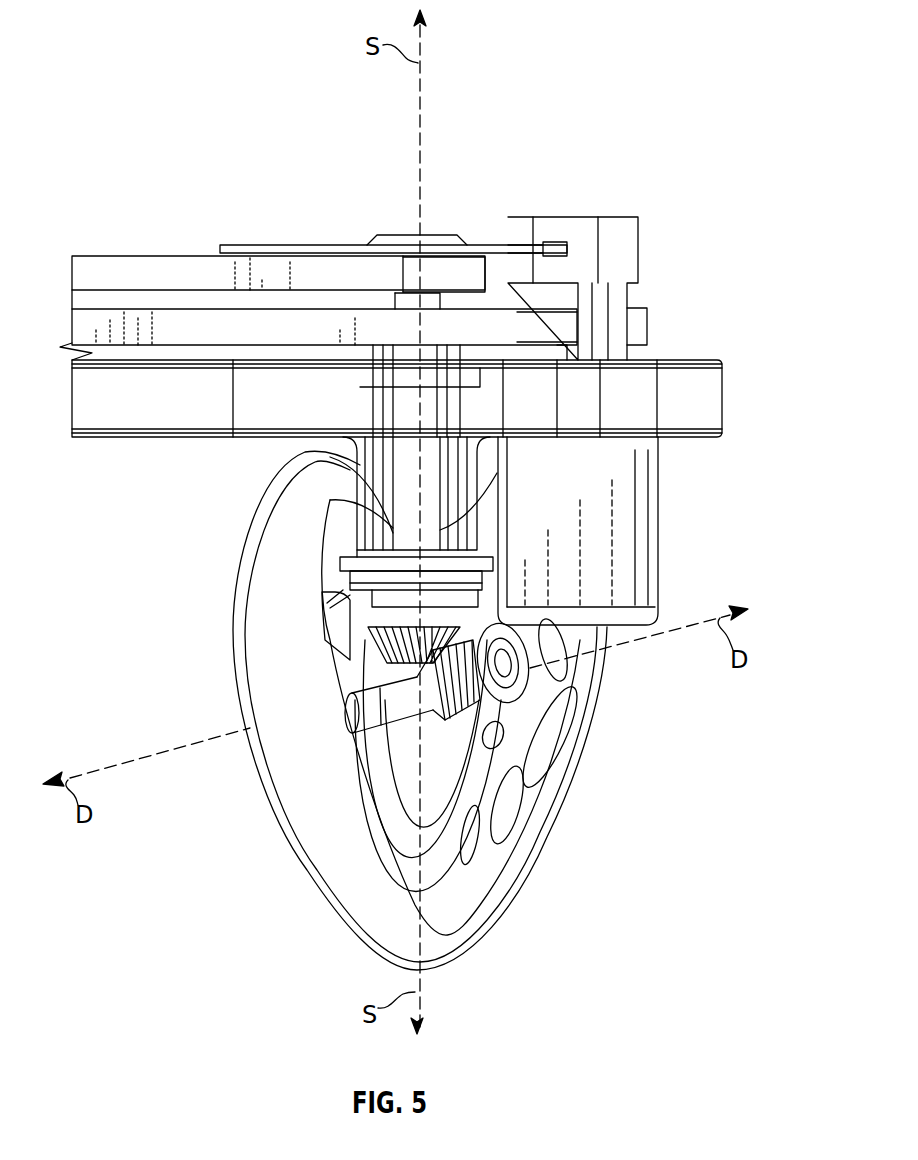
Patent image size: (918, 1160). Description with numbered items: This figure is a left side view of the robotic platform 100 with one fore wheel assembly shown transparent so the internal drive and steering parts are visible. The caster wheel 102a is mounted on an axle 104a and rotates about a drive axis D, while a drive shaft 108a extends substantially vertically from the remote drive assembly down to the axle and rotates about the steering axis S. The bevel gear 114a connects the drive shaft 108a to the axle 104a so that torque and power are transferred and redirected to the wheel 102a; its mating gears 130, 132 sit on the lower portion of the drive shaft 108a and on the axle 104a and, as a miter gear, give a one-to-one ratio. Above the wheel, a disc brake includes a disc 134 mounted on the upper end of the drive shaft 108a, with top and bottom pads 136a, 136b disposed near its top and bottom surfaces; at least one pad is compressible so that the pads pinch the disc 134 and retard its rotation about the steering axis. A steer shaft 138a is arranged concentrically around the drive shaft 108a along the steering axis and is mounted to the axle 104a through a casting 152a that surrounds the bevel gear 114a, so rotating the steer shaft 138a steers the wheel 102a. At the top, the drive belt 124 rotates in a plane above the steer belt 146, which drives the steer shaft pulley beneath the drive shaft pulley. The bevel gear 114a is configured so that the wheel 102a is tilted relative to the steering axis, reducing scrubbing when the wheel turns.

The robotic platform 100 is at (609, 133).
The caster wheel 102a is at (248, 543).
The axle 104a is at (520, 722).
The drive shaft 108a is at (423, 472).
The bevel gear 114a is at (484, 230).
The drive belt 124 is at (100, 270).
The mating gear 130 is at (368, 638).
The mating gear 132 is at (503, 780).
The disc 134 is at (305, 245).
The top pad 136a is at (557, 256).
The bottom pad 136b is at (549, 251).
The steer shaft 138a is at (472, 507).
The steer belt 146 is at (178, 327).
The casting 152a is at (503, 632).